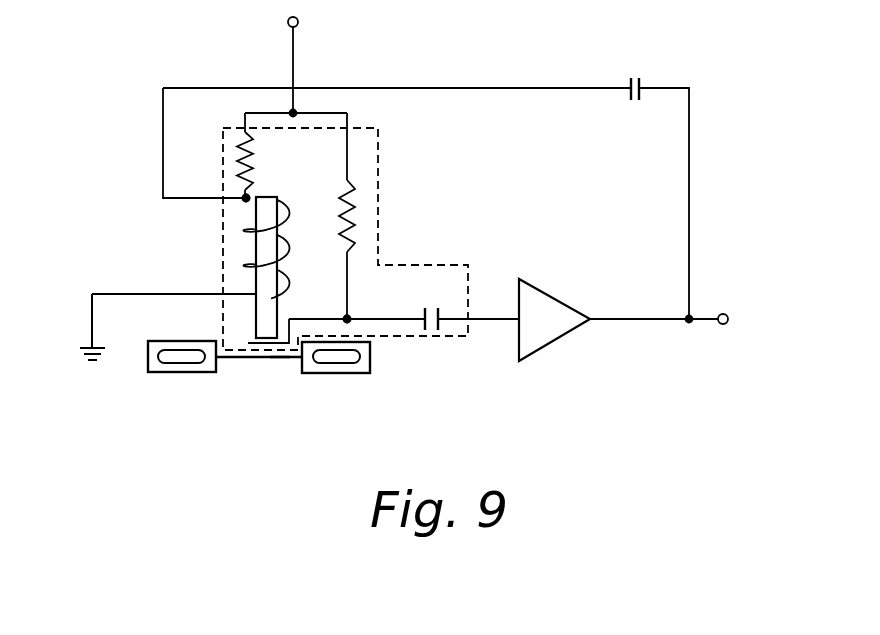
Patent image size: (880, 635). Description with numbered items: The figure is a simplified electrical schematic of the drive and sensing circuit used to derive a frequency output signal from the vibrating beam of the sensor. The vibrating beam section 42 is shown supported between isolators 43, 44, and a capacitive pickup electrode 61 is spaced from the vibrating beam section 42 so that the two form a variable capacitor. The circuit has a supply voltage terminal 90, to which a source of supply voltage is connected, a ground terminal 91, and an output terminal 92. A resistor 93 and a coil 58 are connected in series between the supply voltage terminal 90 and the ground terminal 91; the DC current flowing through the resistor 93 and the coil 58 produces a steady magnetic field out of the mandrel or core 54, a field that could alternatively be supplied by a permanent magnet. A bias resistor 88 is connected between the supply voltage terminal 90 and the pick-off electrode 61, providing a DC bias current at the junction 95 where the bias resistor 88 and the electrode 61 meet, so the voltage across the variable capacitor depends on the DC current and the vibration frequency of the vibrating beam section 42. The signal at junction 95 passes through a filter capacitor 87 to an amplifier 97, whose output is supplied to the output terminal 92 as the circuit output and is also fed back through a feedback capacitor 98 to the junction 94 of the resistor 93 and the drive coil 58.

The supply voltage terminal 90 is at (298, 22).
The resistor 93 is at (238, 172).
The junction 94 is at (246, 199).
The mandrel or core 54 is at (262, 196).
The coil 58 is at (290, 254).
The bias resistor 88 is at (352, 216).
The feedback capacitor 98 is at (643, 86).
The junction 95 is at (349, 317).
The filter capacitor 87 is at (438, 326).
The amplifier 97 is at (566, 334).
The output terminal 92 is at (728, 313).
The ground terminal 91 is at (90, 346).
The isolator 43 is at (175, 373).
The isolator 44 is at (371, 373).
The vibrating beam section 42 is at (274, 358).
The capacitive pickup electrode 61 is at (279, 358).